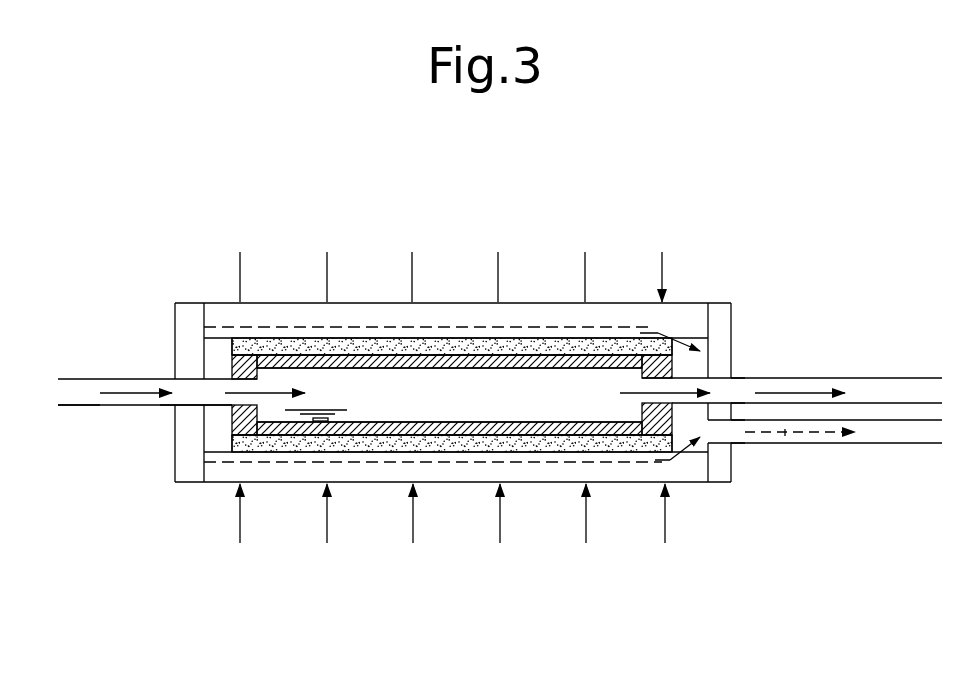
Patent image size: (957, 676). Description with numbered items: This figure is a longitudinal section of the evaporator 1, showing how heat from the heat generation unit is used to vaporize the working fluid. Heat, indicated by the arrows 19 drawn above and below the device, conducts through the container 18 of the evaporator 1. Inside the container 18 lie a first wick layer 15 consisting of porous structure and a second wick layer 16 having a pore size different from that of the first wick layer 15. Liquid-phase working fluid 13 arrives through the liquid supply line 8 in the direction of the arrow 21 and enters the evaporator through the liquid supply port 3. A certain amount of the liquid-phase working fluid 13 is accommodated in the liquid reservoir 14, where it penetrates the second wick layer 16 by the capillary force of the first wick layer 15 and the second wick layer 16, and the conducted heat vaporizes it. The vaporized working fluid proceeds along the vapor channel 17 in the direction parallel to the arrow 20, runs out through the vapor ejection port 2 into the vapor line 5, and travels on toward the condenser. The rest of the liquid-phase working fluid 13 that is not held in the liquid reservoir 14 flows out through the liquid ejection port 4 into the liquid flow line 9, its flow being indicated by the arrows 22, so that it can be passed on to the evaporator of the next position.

The evaporator 1 is at (285, 303).
The vapor ejection port 2 is at (732, 435).
The liquid supply port 3 is at (193, 394).
The liquid ejection port 4 is at (727, 390).
The vapor line 5 is at (913, 443).
The liquid supply line 8 is at (72, 405).
The liquid flow line 9 is at (853, 378).
The liquid-phase working fluid 13 is at (303, 413).
The liquid reservoir 14 is at (417, 397).
The first wick layer 15 is at (338, 372).
The second wick layer 16 is at (465, 330).
The vapor channel 17 is at (538, 457).
The container 18 is at (693, 313).
The arrows 19 is at (663, 535).
The arrow 20 is at (673, 453).
The arrow 21 is at (125, 393).
The arrows 22 is at (777, 390).